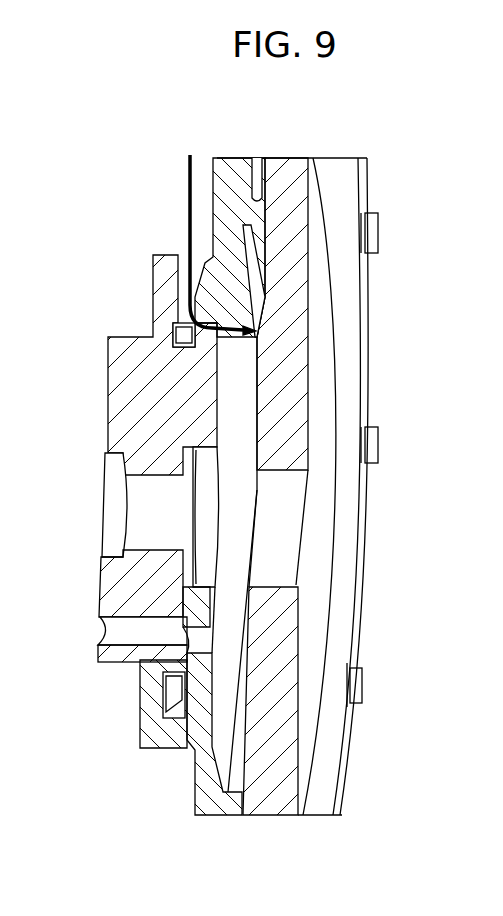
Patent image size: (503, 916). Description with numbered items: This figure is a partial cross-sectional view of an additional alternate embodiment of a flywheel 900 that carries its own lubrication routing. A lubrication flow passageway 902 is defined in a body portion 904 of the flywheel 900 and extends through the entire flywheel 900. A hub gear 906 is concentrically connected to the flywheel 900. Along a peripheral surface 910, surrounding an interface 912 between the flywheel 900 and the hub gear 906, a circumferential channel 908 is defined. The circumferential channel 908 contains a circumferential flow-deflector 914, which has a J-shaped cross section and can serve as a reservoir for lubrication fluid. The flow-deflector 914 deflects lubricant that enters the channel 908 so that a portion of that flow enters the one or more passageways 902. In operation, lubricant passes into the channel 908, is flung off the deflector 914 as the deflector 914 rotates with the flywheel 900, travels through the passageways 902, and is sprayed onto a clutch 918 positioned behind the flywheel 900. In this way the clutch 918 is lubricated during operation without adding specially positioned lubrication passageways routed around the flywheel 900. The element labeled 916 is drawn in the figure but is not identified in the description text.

The flywheel 900 is at (205, 165).
The lubrication flow passageway 902 is at (205, 383).
The body portion 904 is at (200, 392).
The hub gear 906 is at (125, 348).
The circumferential channel 908 is at (167, 708).
The peripheral surface 910 is at (165, 660).
The interface 912 is at (180, 583).
The circumferential flow-deflector 914 is at (175, 326).
The cable tie 916 is at (187, 180).
The clutch 918 is at (290, 265).